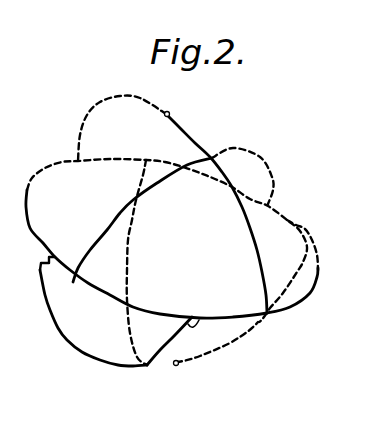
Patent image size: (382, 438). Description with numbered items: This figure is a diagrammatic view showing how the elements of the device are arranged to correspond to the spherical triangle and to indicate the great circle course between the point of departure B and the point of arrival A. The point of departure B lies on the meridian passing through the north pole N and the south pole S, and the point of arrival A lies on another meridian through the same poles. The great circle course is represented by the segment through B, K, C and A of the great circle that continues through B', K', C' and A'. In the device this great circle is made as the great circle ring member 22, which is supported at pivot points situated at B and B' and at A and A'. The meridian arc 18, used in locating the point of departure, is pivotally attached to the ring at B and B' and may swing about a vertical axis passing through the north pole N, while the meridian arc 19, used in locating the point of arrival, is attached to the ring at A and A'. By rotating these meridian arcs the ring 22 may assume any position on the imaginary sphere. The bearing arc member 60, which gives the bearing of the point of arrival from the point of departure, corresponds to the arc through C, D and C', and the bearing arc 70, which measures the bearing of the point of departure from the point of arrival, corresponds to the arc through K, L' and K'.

The meridian arc 18 is at (203, 143).
The meridian arc 19 is at (65, 338).
The great circle ring member 22 is at (44, 232).
The bearing arc member 60 is at (163, 183).
The bearing arc 70 is at (197, 322).
The north pole N is at (169, 112).
The point D is at (212, 158).
The pivot point B' is at (107, 128).
The point K' is at (137, 251).
The point C' is at (167, 260).
The pivot point A' is at (302, 232).
The point of arrival A is at (34, 257).
The point of departure B is at (276, 326).
The point C is at (72, 295).
The point K is at (179, 305).
The south pole S is at (177, 366).
The point L' is at (142, 378).